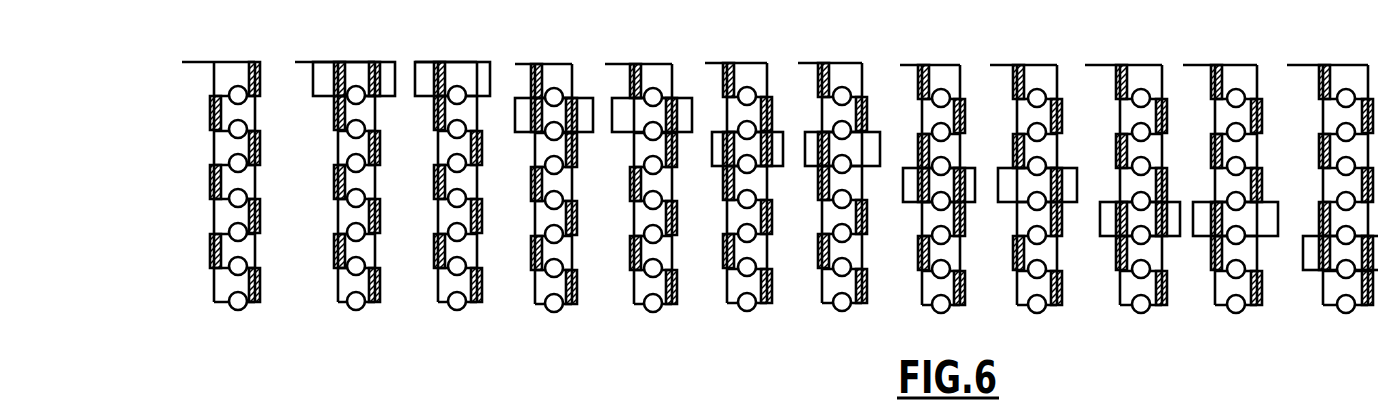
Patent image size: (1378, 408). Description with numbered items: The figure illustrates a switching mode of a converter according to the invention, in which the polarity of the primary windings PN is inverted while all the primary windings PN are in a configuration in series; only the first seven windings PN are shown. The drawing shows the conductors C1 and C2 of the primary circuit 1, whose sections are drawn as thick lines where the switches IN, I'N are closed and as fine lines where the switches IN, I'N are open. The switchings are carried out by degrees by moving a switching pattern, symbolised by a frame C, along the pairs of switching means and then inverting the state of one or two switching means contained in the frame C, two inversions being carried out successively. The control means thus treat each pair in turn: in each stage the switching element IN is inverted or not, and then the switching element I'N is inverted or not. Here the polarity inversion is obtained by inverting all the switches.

The primary circuit 1 is at (238, 50).
The conductor C1 is at (212, 74).
The conductor C2 is at (292, 102).
The frame C is at (388, 76).
The switch IN is at (212, 287).
The switch I'N is at (285, 176).
The primary winding PN is at (553, 92).